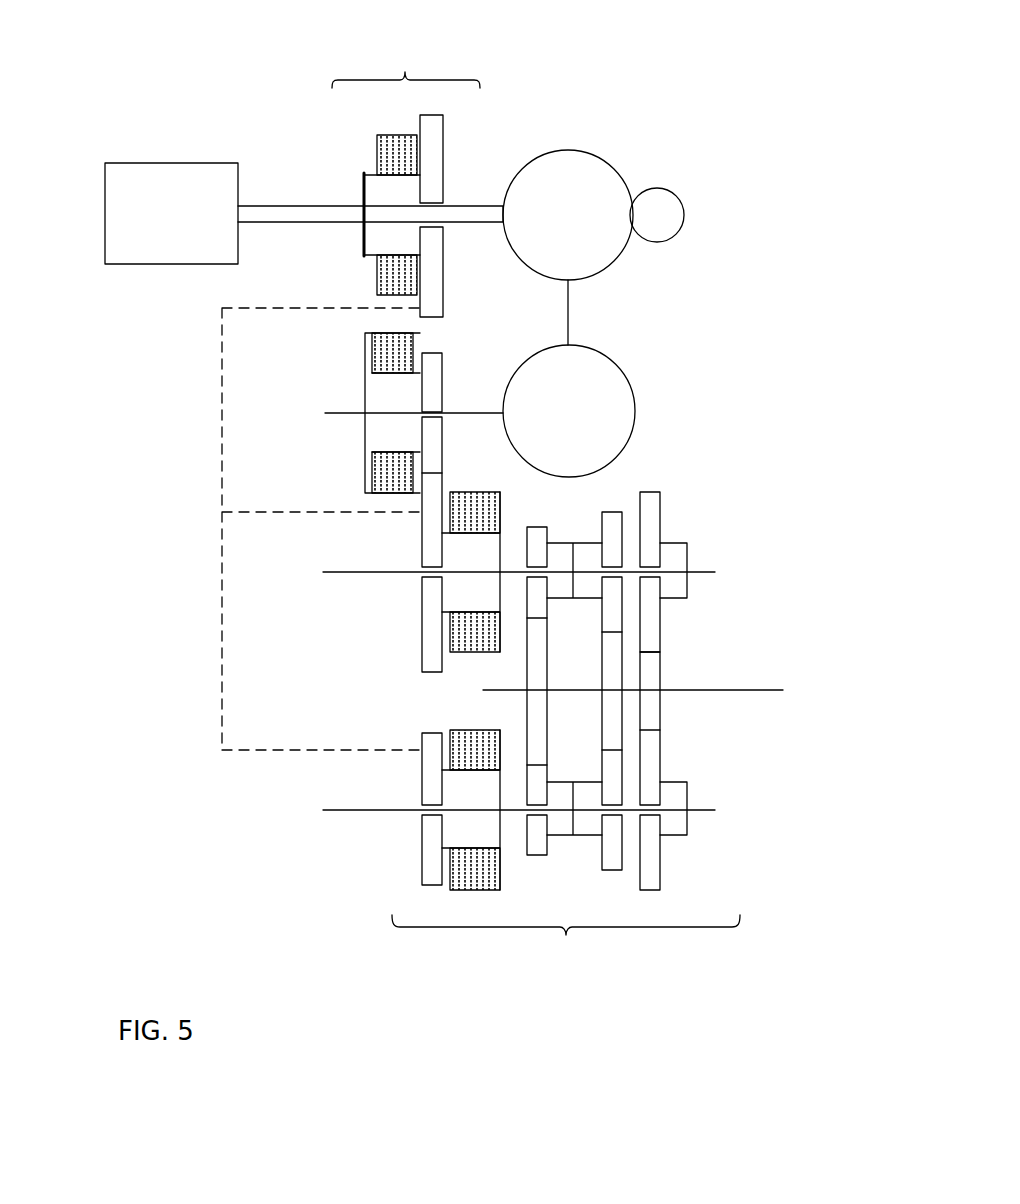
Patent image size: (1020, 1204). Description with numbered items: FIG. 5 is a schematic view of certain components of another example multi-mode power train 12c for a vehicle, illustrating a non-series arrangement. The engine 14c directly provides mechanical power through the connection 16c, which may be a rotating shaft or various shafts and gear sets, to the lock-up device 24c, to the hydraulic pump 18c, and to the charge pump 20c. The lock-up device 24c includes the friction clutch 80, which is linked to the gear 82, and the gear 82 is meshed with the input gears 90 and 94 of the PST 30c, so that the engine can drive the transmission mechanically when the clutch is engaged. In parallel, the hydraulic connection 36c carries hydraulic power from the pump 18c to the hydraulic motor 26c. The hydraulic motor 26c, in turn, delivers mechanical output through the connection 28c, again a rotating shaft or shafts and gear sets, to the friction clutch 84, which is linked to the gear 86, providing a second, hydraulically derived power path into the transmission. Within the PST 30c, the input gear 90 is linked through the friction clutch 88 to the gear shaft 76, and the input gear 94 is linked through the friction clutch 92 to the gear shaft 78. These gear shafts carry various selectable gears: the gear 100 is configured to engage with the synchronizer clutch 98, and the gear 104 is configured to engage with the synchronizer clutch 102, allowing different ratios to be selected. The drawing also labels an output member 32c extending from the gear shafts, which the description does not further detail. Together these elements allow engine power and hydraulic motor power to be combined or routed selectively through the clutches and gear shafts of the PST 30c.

The powertrain 12c is at (148, 872).
The engine 14c is at (178, 163).
The connection 16c is at (330, 222).
The hydraulic pump 18c is at (541, 150).
The charge pump 20c is at (670, 190).
The lock-up device 24c is at (400, 72).
The third motor/generator 26c is at (640, 398).
The connection 28c is at (348, 413).
The PST 30c is at (566, 935).
The output shaft 32c is at (745, 690).
The hydraulic connection 36c is at (573, 320).
The gear shaft 76 is at (350, 572).
The gear shaft 78 is at (345, 810).
The friction clutch 80 is at (375, 152).
The gear 82 is at (447, 165).
The friction clutch 84 is at (372, 345).
The gear 86 is at (445, 355).
The friction clutch 88 is at (500, 535).
The input gear 90 is at (422, 650).
The friction clutch 92 is at (457, 730).
The input gear 94 is at (422, 862).
The synchronizer clutch 98 is at (688, 545).
The gear 100 is at (662, 493).
The synchronizer clutch 102 is at (690, 783).
The gear 104 is at (660, 872).